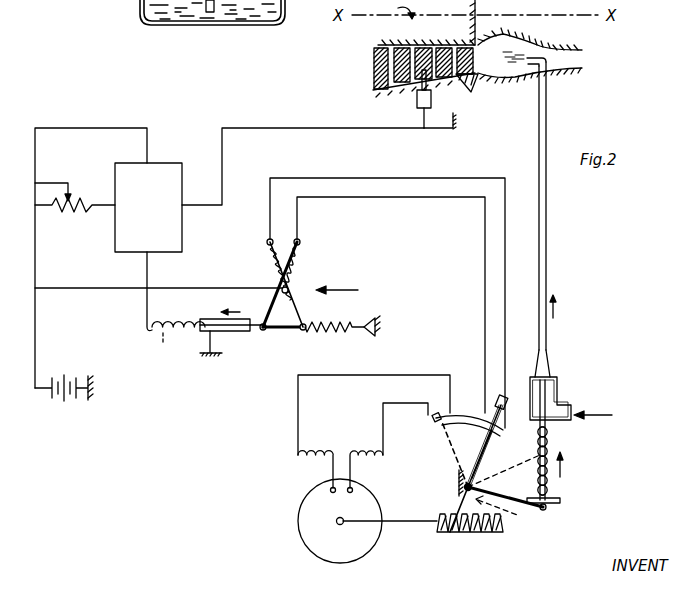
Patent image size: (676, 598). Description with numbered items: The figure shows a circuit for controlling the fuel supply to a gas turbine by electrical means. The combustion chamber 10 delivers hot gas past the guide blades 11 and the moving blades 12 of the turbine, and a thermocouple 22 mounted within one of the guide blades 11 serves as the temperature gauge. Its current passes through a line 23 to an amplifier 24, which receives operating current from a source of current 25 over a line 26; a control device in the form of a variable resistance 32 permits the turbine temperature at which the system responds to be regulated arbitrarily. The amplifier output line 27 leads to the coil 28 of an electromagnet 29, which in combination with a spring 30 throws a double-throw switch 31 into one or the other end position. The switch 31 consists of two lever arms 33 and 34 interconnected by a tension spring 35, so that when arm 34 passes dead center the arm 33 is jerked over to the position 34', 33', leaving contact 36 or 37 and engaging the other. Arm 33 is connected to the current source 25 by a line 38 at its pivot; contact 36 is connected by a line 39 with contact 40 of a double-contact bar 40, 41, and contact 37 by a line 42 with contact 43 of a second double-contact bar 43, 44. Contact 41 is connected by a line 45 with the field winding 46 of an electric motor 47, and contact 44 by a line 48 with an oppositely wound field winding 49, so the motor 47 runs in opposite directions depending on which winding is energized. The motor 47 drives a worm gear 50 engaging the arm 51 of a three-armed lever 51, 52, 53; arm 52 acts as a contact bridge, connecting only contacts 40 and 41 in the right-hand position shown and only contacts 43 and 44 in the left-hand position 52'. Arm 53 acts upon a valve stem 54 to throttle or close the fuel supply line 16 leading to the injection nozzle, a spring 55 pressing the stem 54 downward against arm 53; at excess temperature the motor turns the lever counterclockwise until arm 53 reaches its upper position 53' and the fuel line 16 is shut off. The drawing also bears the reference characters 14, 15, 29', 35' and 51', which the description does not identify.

The combustion chamber 10 is at (528, 45).
The guide blades 11 is at (474, 91).
The moving blades 12 is at (400, 48).
The fuel nozzle 14 is at (548, 56).
The venturi lower wall 15 is at (570, 72).
The fuel supply line 16 is at (548, 252).
The thermocouple 22 is at (437, 63).
The line 23 is at (224, 172).
The amplifier 24 is at (158, 170).
The source of current 25 is at (56, 398).
The line 26 is at (92, 128).
The amplifier line 27 is at (151, 279).
The coil 28 is at (172, 322).
The electromagnet 29 is at (226, 337).
The solenoid armature 29' is at (159, 352).
The spring 30 is at (338, 333).
The double-throw switch 31 is at (355, 289).
The control device 32 is at (82, 192).
The lever arm 33 is at (302, 281).
The position of lever arm 33' is at (262, 278).
The lever arm 34 is at (297, 316).
The position of lever arm 34' is at (249, 310).
The tension spring 35 is at (307, 269).
The spring 35' is at (258, 274).
The contact 36 is at (268, 238).
The contact 37 is at (300, 240).
The line 38 is at (86, 291).
The line 39 is at (507, 236).
The contact 40 is at (464, 430).
The contact 41 is at (504, 402).
The line 42 is at (483, 281).
The contact 43 is at (440, 418).
The contact 44 is at (455, 406).
The line 45 is at (410, 375).
The field winding 46 is at (312, 448).
The electric motor 47 is at (306, 530).
The line 48 is at (399, 404).
The field winding 49 is at (368, 448).
The worm gear 50 is at (470, 537).
The arm 51 is at (438, 509).
The lever arm position 51' is at (498, 512).
The arm 52 is at (489, 454).
The left-hand end position of arm 52' is at (440, 456).
The arm 53 is at (505, 493).
The upper end position of arm 53' is at (504, 459).
The valve stem 54 is at (553, 495).
The spring 55 is at (556, 424).